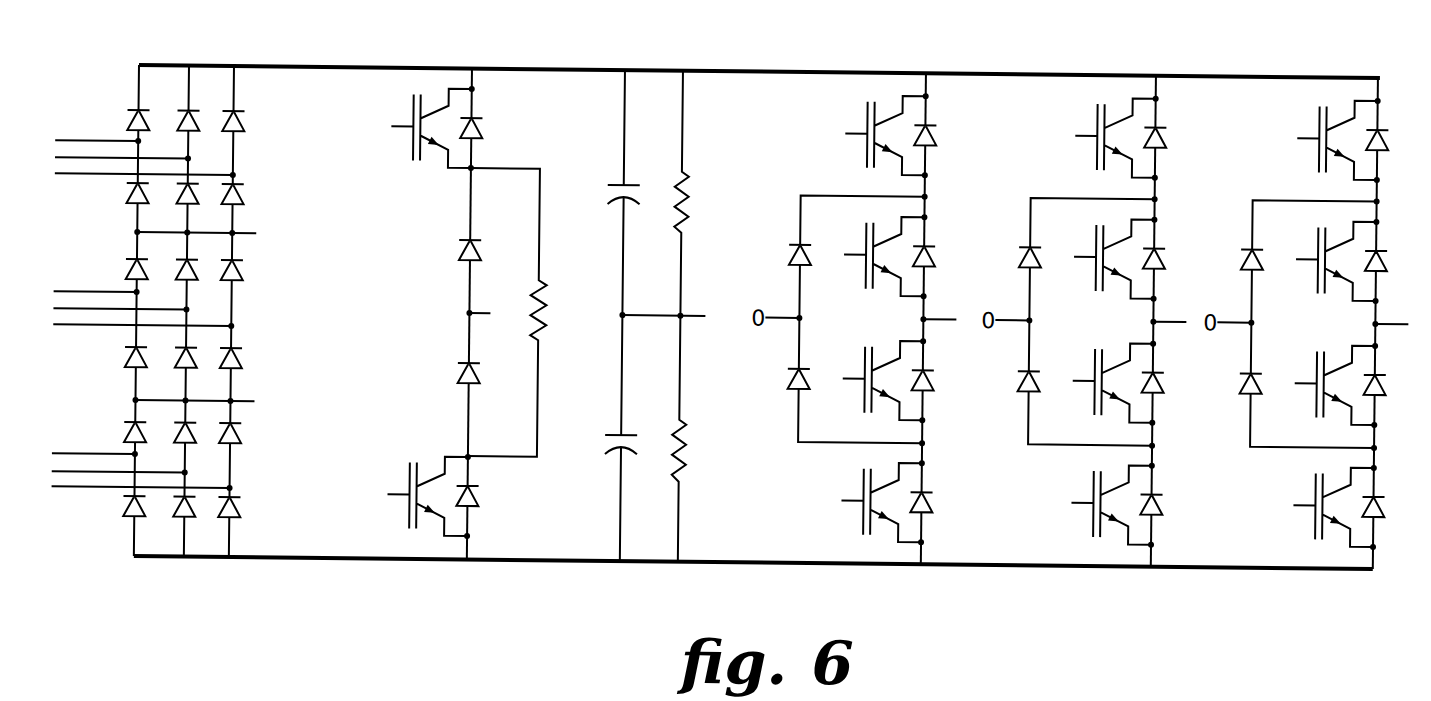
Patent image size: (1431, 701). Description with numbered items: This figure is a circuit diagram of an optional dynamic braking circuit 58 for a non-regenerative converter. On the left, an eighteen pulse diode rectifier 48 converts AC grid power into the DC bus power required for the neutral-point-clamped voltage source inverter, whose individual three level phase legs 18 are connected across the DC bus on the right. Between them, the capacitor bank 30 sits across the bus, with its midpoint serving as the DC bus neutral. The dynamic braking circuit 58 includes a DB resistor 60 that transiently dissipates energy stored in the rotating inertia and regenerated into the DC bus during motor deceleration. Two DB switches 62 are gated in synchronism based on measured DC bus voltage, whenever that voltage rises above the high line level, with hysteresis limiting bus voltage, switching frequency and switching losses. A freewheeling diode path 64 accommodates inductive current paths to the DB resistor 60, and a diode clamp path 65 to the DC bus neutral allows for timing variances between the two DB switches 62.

The NPC three level phase leg 18 is at (950, 99).
The capacitor bank 30 is at (626, 565).
The eighteen pulse diode rectifier 48 is at (231, 561).
The dynamic braking circuit 58 is at (468, 359).
The DB resistor 60 is at (549, 290).
The DB switches 62 is at (404, 138).
The freewheeling diode path 64 is at (481, 122).
The diode clamp path 65 is at (464, 247).